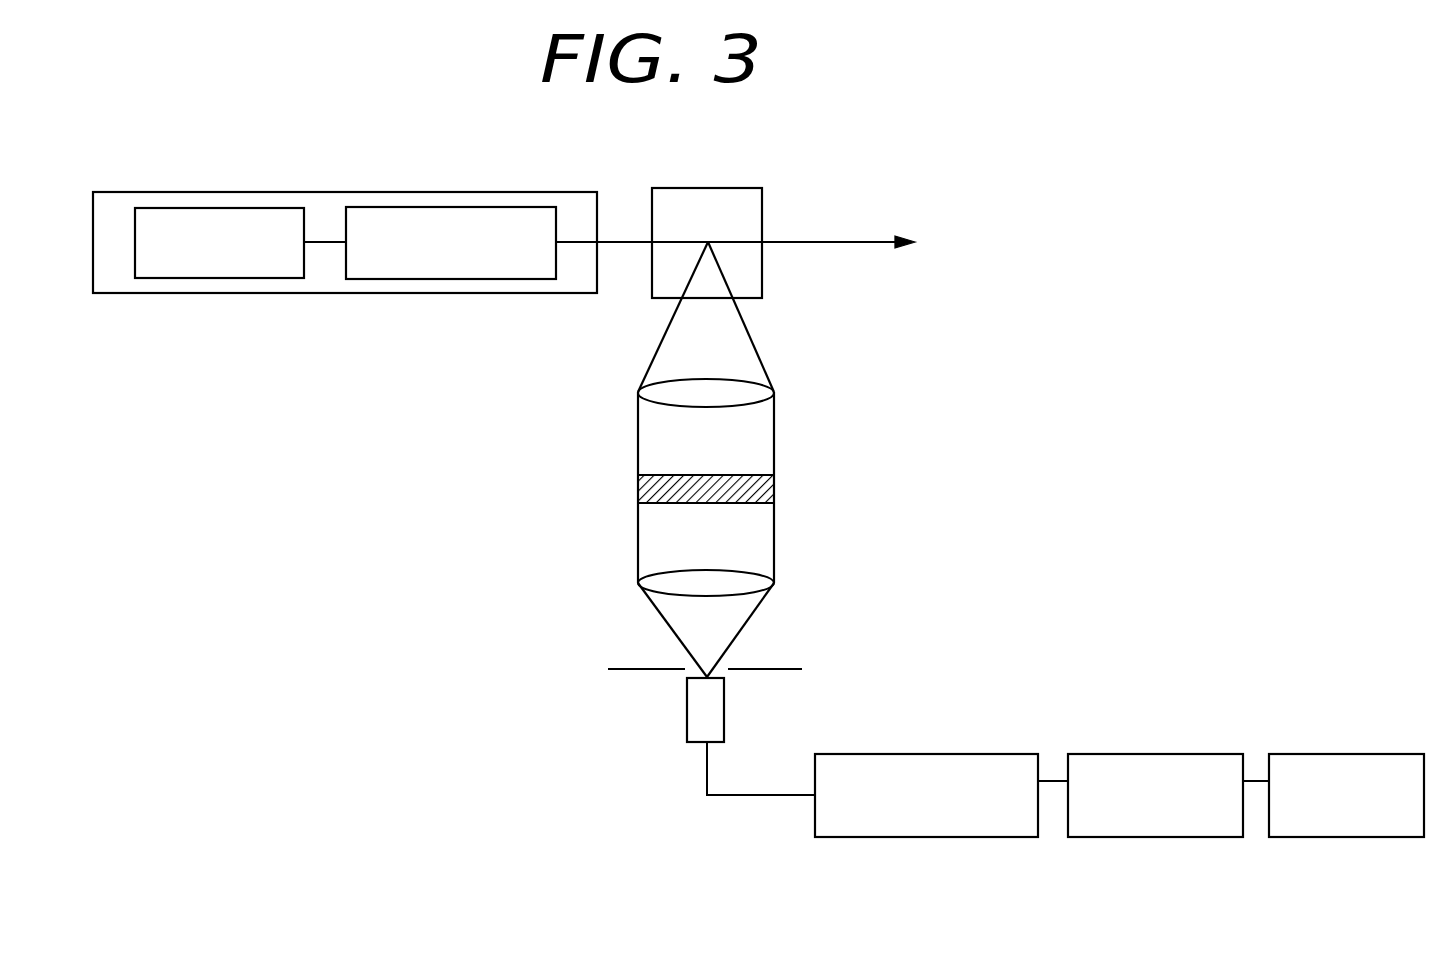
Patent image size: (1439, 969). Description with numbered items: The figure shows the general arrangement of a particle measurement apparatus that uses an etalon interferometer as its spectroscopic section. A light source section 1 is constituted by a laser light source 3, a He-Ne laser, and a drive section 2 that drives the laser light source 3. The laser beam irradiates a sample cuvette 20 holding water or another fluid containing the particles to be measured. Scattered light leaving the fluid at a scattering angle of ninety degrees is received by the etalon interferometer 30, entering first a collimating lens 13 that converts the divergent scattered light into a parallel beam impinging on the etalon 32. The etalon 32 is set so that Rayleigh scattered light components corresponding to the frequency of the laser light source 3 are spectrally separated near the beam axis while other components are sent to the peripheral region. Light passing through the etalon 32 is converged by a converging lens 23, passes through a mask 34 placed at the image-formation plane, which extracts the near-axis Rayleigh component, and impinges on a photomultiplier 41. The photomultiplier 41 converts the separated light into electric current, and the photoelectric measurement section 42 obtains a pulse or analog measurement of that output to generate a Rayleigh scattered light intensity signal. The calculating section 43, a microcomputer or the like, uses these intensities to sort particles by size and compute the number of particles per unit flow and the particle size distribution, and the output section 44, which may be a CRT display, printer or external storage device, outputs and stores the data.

The light source section 1 is at (138, 192).
The drive section 2 is at (153, 278).
The laser light source 3 is at (443, 207).
The sample cuvette 20 is at (680, 188).
The etalon interferometer 30 is at (753, 459).
The collimating lens 13 is at (665, 397).
The etalon 32 is at (777, 490).
The converging lens 23 is at (665, 579).
The mask 34 is at (778, 669).
The photomultiplier 41 is at (685, 695).
The photoelectric measurement section 42 is at (888, 837).
The calculating section 43 is at (1132, 837).
The output section 44 is at (1327, 837).